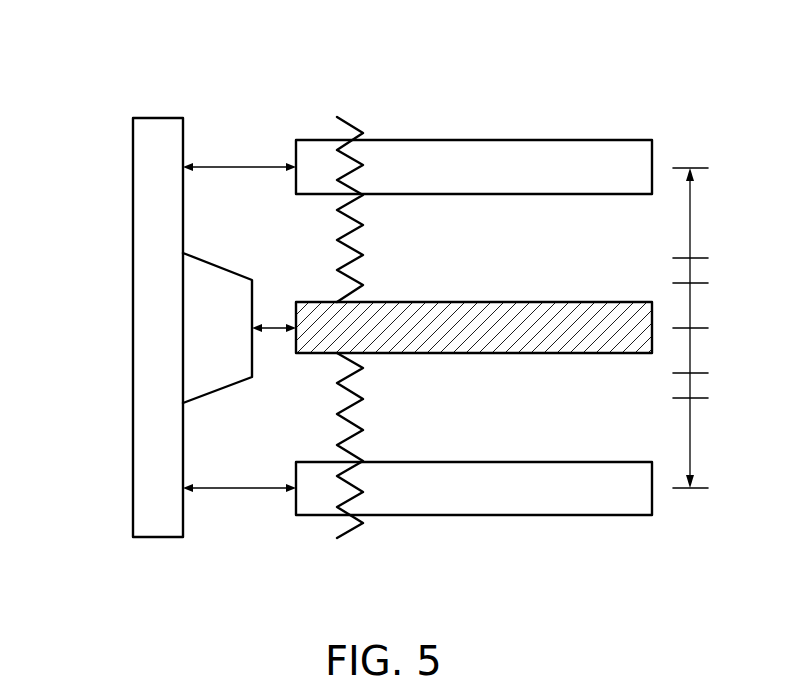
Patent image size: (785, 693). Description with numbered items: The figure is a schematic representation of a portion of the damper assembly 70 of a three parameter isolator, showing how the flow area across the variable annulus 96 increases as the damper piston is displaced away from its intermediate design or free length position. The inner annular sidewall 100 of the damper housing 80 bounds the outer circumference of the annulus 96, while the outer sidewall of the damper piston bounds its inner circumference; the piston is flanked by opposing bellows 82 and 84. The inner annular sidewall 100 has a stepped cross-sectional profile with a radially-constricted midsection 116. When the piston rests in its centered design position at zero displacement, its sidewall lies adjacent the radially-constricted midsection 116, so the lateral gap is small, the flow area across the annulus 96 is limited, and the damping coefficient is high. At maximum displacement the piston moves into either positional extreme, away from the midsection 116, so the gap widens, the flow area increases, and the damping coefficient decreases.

The damper assembly 70 is at (126, 74).
The damper housing 80 is at (127, 464).
The inner annular sidewall 100 is at (153, 146).
The radially-constricted midsection 116 is at (122, 253).
The variable annulus 96 is at (295, 547).
The bellows 82 is at (358, 251).
The bellows 84 is at (358, 424).